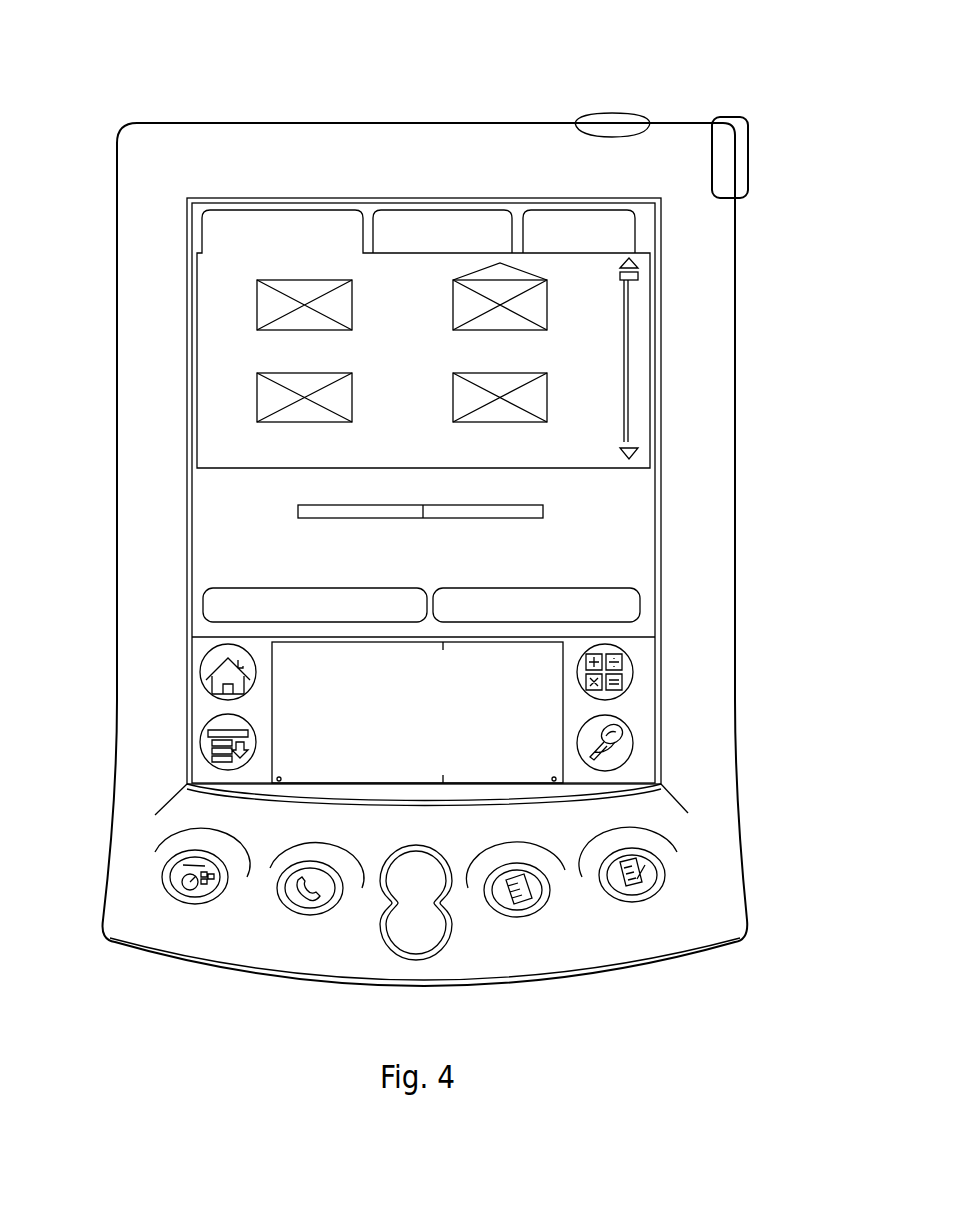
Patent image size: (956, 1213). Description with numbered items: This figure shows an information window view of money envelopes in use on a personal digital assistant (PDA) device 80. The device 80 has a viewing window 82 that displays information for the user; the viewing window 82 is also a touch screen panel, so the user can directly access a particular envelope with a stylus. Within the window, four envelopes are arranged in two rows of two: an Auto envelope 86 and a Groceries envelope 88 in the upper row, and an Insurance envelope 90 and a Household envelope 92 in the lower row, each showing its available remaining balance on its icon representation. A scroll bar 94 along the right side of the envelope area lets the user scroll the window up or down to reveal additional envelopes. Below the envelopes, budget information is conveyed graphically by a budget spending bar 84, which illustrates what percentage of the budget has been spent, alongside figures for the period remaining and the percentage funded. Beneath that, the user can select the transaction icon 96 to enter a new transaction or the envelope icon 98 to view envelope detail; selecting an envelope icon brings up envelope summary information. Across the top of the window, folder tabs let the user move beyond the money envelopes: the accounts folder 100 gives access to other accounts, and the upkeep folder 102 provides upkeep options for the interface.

The personal digital assistant (PDA) device 80 is at (673, 122).
The viewing window 82 is at (648, 437).
The budget spending bar 84 is at (205, 545).
The Auto envelope 86 is at (257, 313).
The Groceries envelope 88 is at (547, 320).
The Insurance envelope 90 is at (257, 407).
The Household envelope 92 is at (547, 385).
The scroll bar 94 is at (627, 395).
The transaction icon 96 is at (205, 612).
The envelope icon 98 is at (640, 605).
The accounts folder 100 is at (407, 216).
The upkeep folder 102 is at (545, 216).